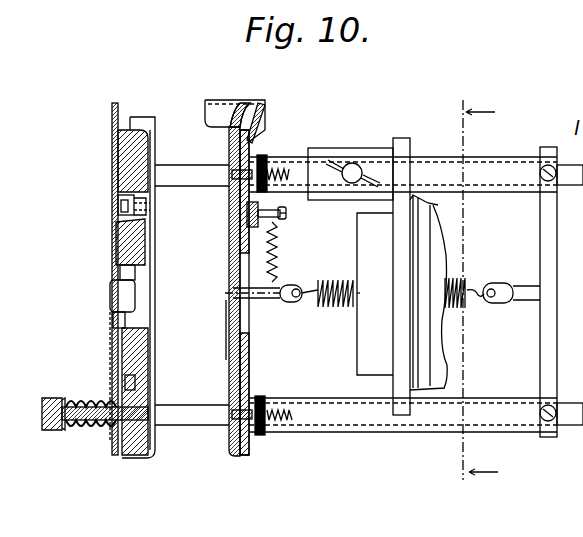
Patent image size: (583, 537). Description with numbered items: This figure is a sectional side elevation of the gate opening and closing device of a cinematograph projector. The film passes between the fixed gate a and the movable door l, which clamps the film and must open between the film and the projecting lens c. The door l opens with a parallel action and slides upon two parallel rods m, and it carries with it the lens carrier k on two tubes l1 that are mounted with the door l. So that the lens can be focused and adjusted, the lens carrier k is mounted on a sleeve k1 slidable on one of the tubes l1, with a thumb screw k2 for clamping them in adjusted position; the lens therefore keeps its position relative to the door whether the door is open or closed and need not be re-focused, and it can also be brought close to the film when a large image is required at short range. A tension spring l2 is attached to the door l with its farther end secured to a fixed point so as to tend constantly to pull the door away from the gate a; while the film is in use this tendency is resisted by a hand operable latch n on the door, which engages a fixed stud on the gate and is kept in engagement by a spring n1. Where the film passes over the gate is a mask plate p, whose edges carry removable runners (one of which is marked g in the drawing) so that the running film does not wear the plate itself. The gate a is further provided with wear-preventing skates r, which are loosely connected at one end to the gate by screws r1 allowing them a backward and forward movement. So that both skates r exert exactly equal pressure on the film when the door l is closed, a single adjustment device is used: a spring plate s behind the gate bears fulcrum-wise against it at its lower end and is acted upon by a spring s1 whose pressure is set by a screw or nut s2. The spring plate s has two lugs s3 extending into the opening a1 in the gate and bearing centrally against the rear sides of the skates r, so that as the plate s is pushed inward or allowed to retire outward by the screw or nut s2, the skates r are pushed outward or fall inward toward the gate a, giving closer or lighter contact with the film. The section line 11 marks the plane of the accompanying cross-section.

The screws r1 is at (122, 205).
The skates r is at (145, 216).
The gate a is at (120, 238).
The opening a1 is at (125, 272).
The lugs s3 is at (125, 302).
The spring plate s is at (115, 364).
The screw or nut s2 is at (54, 430).
The spring s1 is at (93, 430).
The parallel rods m is at (186, 172).
The mask plate p is at (228, 364).
The plate g is at (227, 327).
The door l is at (247, 372).
The tubes l1 is at (294, 157).
The tension spring l2 is at (338, 312).
The latch n is at (276, 216).
The spring n1 is at (280, 266).
The lens carrier k is at (410, 152).
The sleeve k1 is at (338, 150).
The thumb screw k2 is at (356, 165).
The lens c is at (383, 367).
The section line 11— 11 is at (475, 290).